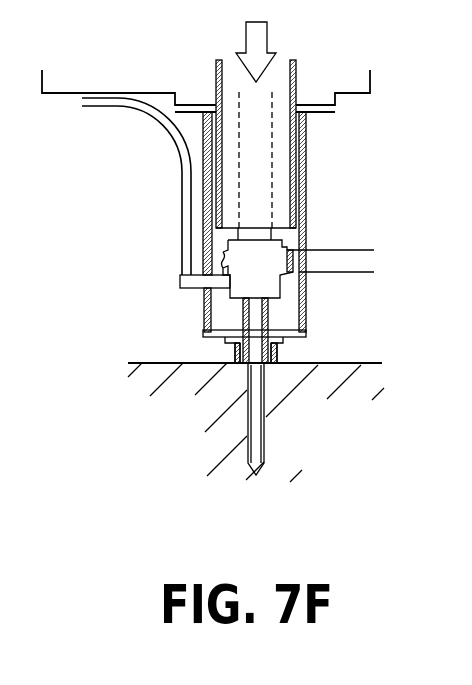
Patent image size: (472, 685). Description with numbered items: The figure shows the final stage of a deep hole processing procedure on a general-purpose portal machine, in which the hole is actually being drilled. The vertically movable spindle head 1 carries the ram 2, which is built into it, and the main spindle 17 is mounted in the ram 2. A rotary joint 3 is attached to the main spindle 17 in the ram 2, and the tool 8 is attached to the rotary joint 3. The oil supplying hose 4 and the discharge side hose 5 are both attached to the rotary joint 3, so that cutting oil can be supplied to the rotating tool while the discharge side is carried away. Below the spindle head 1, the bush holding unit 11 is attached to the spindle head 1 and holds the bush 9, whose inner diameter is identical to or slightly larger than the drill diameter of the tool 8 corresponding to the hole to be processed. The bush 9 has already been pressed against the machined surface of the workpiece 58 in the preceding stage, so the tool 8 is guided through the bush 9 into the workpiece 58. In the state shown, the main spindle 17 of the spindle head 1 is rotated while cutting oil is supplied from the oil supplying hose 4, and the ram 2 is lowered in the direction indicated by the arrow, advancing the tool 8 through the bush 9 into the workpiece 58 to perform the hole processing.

The spindle head 1 is at (63, 96).
The ram 2 is at (216, 173).
The rotary joint 3 is at (268, 287).
The oil supplying hose 4 is at (102, 102).
The discharge side hose 5 is at (341, 260).
The tool 8 is at (242, 312).
The bush 9 is at (270, 366).
The bush holding unit 11 is at (214, 338).
The main spindle 17 is at (260, 145).
The workpiece 58 is at (338, 362).